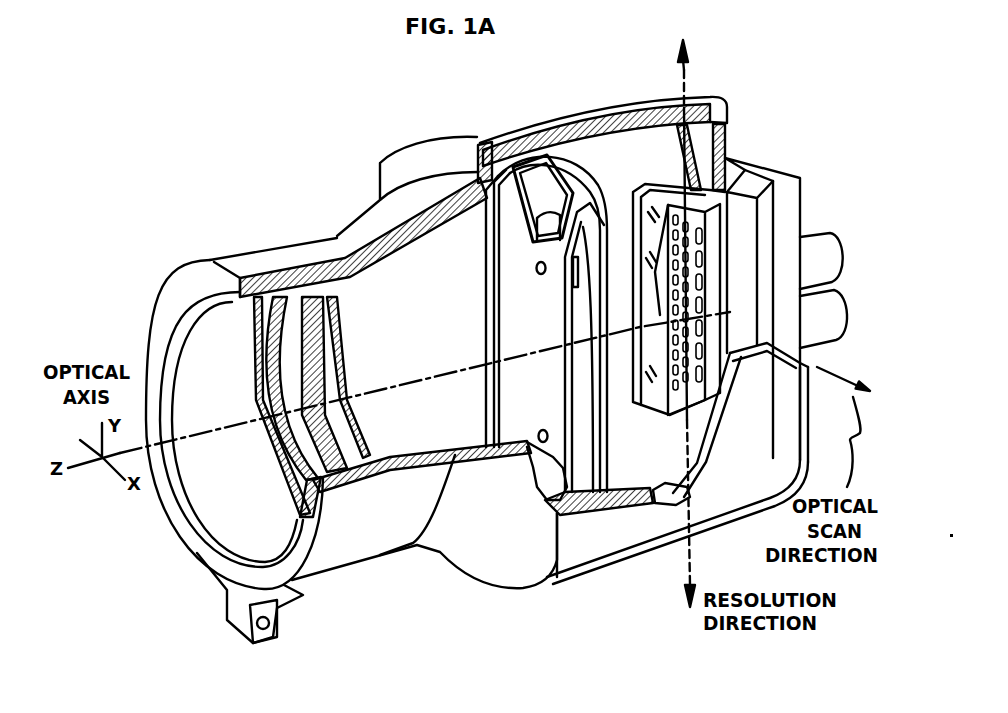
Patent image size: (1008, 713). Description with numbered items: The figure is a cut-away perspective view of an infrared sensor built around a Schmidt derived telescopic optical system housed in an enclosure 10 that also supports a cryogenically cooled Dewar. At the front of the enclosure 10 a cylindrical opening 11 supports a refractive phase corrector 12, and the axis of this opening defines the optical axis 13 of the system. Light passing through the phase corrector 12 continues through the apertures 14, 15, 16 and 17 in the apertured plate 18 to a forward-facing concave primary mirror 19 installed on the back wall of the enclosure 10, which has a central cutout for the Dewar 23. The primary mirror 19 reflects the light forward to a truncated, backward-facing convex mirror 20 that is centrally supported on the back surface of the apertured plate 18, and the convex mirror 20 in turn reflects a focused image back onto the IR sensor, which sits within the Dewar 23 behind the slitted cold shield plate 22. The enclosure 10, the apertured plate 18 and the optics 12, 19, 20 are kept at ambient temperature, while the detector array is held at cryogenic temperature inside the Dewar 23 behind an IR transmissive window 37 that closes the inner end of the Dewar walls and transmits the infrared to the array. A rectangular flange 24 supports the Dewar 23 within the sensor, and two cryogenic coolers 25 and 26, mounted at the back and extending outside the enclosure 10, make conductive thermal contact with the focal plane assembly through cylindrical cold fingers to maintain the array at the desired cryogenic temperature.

The enclosure 10 is at (468, 568).
The cylindrical opening 11 is at (192, 503).
The refractive phase corrector 12 is at (300, 270).
The optical axis 13 is at (553, 336).
The aperture 14 is at (583, 227).
The aperture 15 is at (503, 252).
The aperture 16 is at (537, 177).
The aperture 17 is at (547, 477).
The apertured plate 18 is at (486, 306).
The primary mirror 19 is at (697, 187).
The convex mirror 20 is at (592, 497).
The slitted cold shield plate 22 is at (690, 213).
The Dewar 23 is at (742, 185).
The rectangular flange 24 is at (798, 195).
The cryogenic cooler 25 is at (818, 218).
The cryogenic cooler 26 is at (846, 305).
The IR transmissive window 37 is at (652, 400).